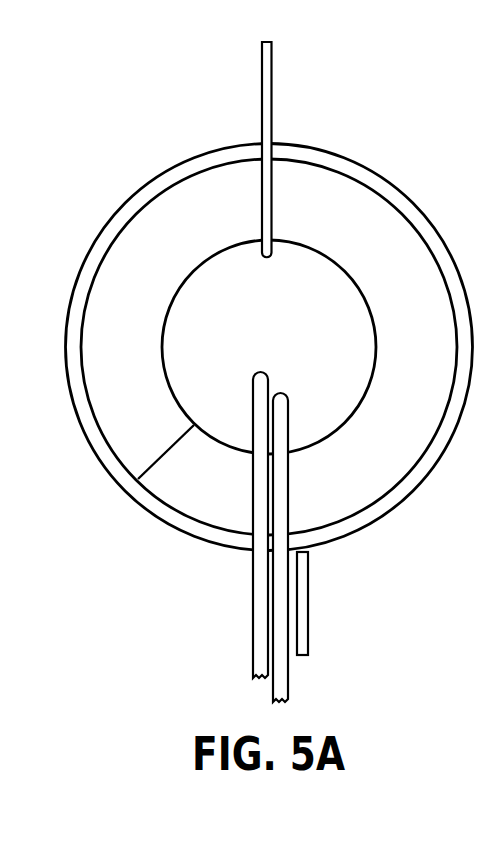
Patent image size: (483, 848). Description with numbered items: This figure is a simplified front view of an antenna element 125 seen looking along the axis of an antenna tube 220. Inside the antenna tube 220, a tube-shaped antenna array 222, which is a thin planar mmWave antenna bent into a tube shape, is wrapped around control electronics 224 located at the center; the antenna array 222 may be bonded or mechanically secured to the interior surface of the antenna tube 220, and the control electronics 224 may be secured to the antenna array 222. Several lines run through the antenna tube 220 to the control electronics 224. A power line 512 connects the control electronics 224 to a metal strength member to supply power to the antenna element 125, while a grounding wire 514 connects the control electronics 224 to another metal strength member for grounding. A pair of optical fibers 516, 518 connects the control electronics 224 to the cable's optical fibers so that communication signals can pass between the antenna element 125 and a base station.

The antenna element 125 is at (260, 318).
The antenna tube 220 is at (168, 168).
The tube-shaped antenna array 222 is at (326, 182).
The control electronics 224 is at (326, 264).
The power line 512 is at (272, 52).
The grounding wire 514 is at (309, 587).
The optical fiber 516 is at (252, 608).
The optical fiber 518 is at (289, 675).